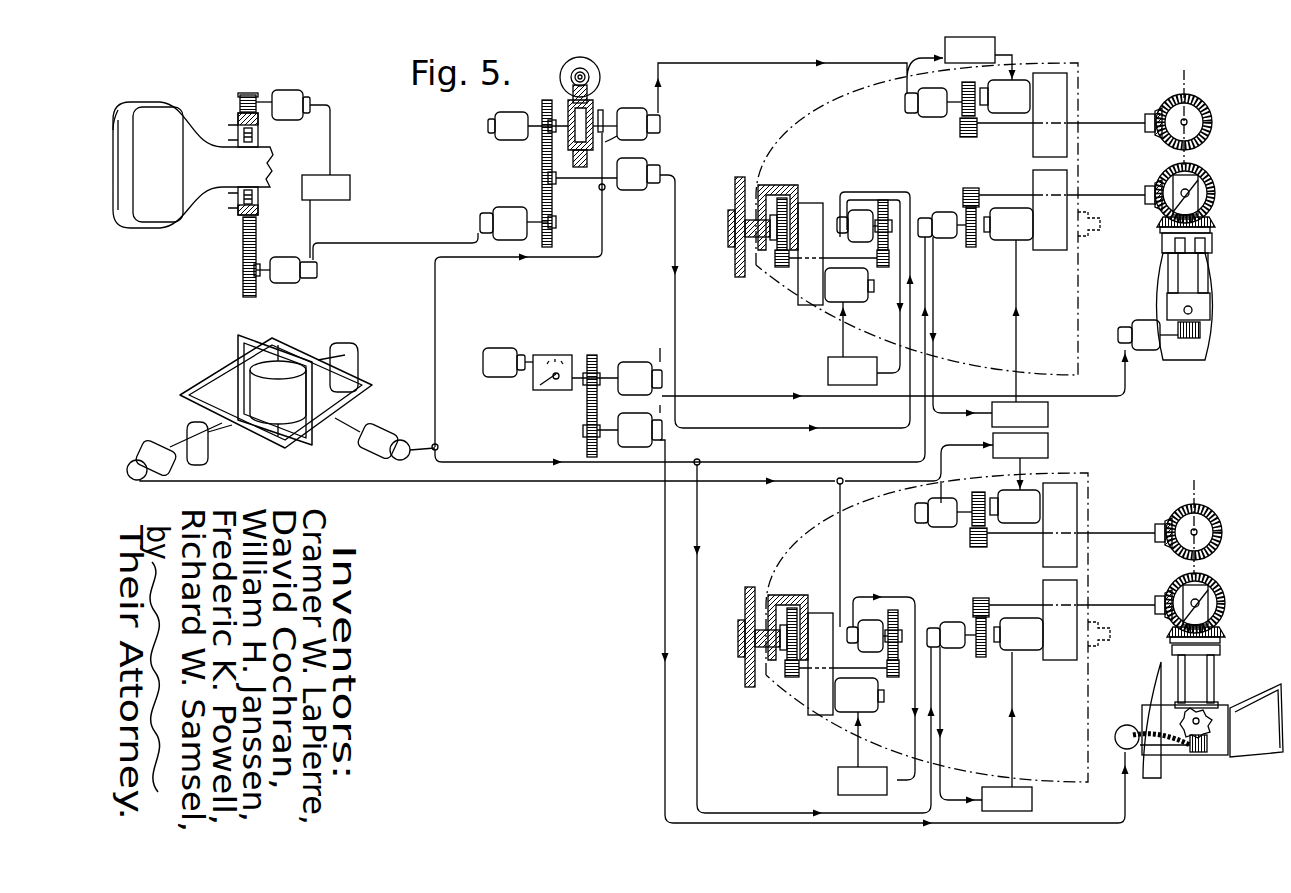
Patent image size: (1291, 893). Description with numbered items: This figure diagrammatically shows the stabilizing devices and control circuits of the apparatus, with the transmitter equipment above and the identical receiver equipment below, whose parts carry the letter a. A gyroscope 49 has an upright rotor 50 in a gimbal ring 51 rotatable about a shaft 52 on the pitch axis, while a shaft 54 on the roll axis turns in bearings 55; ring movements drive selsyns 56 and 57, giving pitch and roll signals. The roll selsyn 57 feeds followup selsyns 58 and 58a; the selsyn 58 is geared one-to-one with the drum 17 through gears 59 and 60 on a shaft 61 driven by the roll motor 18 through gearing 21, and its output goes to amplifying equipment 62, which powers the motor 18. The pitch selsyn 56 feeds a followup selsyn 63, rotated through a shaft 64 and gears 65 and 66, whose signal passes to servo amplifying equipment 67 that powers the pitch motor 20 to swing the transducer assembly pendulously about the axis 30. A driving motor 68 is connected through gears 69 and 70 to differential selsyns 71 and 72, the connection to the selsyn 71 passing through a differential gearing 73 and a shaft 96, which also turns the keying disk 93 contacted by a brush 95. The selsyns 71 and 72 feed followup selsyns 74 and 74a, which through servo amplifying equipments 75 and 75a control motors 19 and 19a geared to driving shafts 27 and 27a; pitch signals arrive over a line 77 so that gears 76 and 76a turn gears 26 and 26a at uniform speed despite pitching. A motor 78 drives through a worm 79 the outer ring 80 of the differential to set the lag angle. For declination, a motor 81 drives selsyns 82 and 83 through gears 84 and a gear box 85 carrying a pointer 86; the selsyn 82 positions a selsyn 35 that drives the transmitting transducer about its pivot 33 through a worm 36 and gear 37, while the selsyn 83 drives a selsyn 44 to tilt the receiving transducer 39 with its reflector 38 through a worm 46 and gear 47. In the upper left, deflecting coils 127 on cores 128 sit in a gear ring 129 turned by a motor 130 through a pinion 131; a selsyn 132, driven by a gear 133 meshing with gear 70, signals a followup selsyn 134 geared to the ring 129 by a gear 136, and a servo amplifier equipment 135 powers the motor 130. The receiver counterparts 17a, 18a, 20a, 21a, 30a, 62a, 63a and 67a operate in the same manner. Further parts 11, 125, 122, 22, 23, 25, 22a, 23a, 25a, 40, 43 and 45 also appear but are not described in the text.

The lamp 11 is at (122, 107).
The reflector 125 is at (180, 103).
The lamp neck 122 is at (222, 133).
The deflecting coils 127 is at (258, 129).
The cores 128 is at (258, 142).
The gear ring 129 is at (240, 100).
The pinion 131 is at (255, 93).
The motor 130 is at (283, 105).
The servo amplifier equipment 135 is at (326, 187).
The followup selsyn 134 is at (280, 257).
The gear 136 is at (243, 255).
The selsyn 132 is at (514, 223).
The gear 133 is at (552, 200).
The driving motor 68 is at (528, 126).
The gear 69 is at (542, 142).
The gear 70 is at (548, 176).
The selsyn 71 is at (638, 124).
The selsyn 72 is at (638, 174).
The differential gearing 73 is at (567, 113).
The motor 78 is at (592, 64).
The worm 79 is at (571, 72).
The outer ring 80 is at (566, 86).
The rotating disk 93 is at (610, 124).
The brush 95 is at (603, 110).
The shaft 96 is at (606, 146).
The line 77 is at (436, 297).
The servo amplifying equipment 75 is at (980, 58).
The servo amplifying equipment 75a is at (1020, 461).
The gyroscope 49 is at (268, 391).
The rotor 50 is at (278, 390).
The gimbal ring 51 is at (262, 330).
The shaft 52 is at (345, 432).
The shaft 54 is at (212, 432).
The bearings 55 is at (352, 344).
The selsyn 56 is at (385, 457).
The selsyn 57 is at (150, 446).
The driving motor 81 is at (508, 362).
The selsyn 82 is at (640, 371).
The selsyn 83 is at (640, 426).
The gears 84 is at (587, 410).
The gear box 85 is at (568, 355).
The pointer 86 is at (540, 385).
The drum 17 is at (782, 322).
The roll motor 18 is at (849, 285).
The motor 19 is at (1023, 115).
The pitch motor 20 is at (1008, 224).
The gearing 21 is at (810, 254).
The pinion 22 is at (782, 267).
The rack 23 is at (782, 198).
The gear box 25 is at (1066, 210).
The gear 26 is at (1215, 222).
The driving shaft 27 is at (1105, 118).
The axis 30 is at (1190, 190).
The pivot 33 is at (1192, 308).
The selsyn 35 is at (1146, 350).
The worm 36 is at (1190, 338).
The gear 37 is at (1210, 318).
The followup selsyn 58 is at (857, 226).
The gear 59 is at (883, 200).
The gear 60 is at (884, 267).
The shaft 61 is at (858, 258).
The amplifying equipment 62 is at (852, 371).
The followup selsyn 63 is at (937, 212).
The shaft 64 is at (1005, 195).
The gear 65 is at (975, 188).
The gear 66 is at (970, 247).
The servo amplifying equipment 67 is at (1020, 333).
The followup selsyn 74 is at (927, 117).
The driving gear 76 is at (1216, 191).
The drum 17a is at (805, 732).
The roll motor 18a is at (859, 695).
The motor 19a is at (1033, 525).
The pitch motor 20a is at (1018, 634).
The gearing 21a is at (821, 664).
The pinion 22a is at (778, 700).
The rack 23a is at (775, 625).
The gear box 25a is at (1076, 620).
The gear 26a is at (1214, 630).
The driving shaft 27a is at (1104, 527).
The axis 30a is at (1226, 599).
The followup selsyn 58a is at (867, 610).
The amplifying equipment 62a is at (862, 781).
The followup selsyn 63a is at (951, 622).
The servo amplifying equipment 67a is at (1007, 731).
The followup selsyn 74a is at (951, 522).
The driving gear 76a is at (1214, 603).
The reflector 38 is at (1158, 670).
The receiving transducer 39 is at (1256, 720).
The frame 40 is at (1186, 690).
The housing 43 is at (1186, 755).
The selsyn 44 is at (1121, 727).
The flexible shaft 45 is at (1142, 750).
The worm 46 is at (1203, 752).
The gear 47 is at (1180, 724).